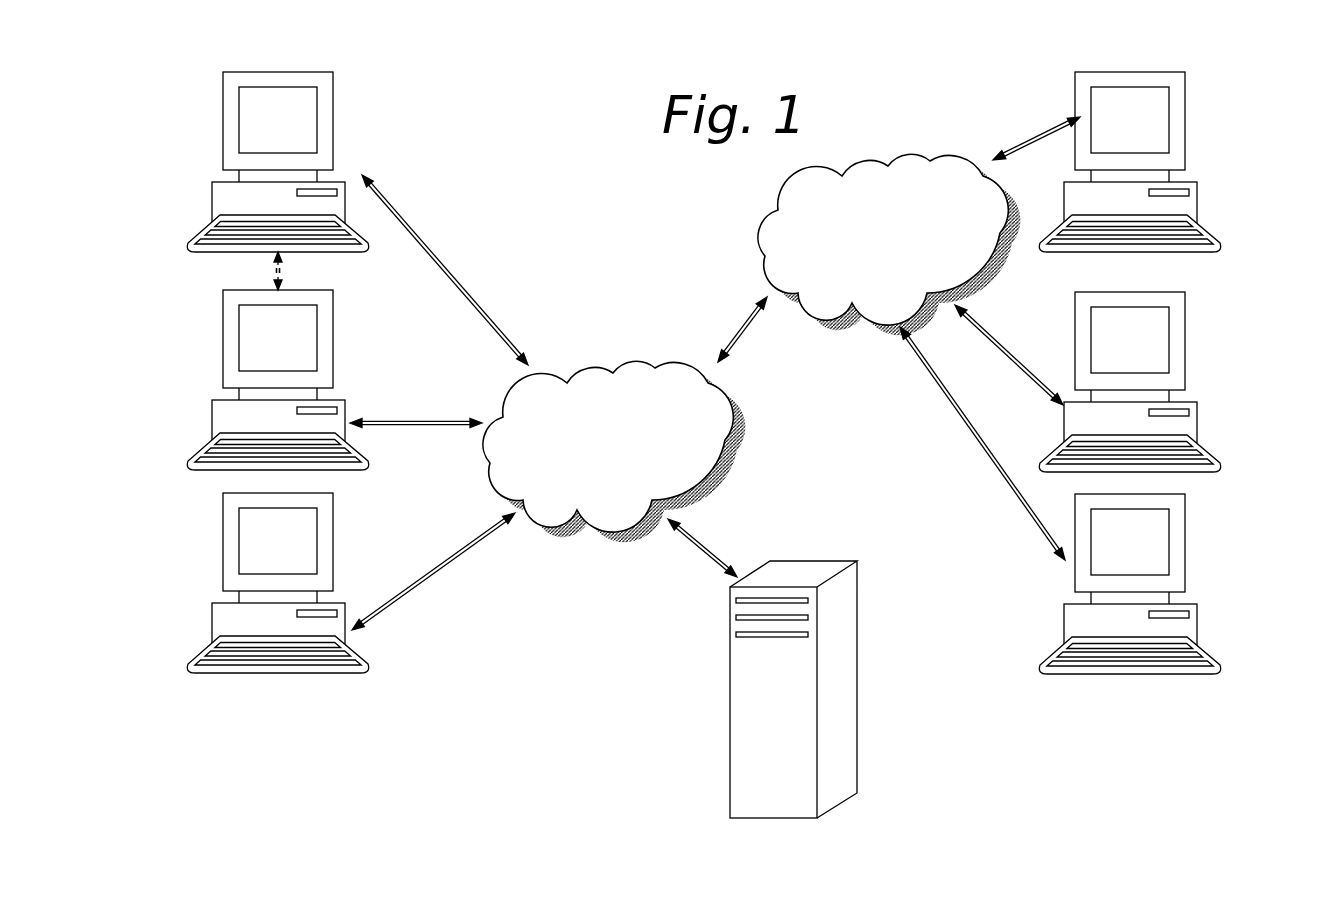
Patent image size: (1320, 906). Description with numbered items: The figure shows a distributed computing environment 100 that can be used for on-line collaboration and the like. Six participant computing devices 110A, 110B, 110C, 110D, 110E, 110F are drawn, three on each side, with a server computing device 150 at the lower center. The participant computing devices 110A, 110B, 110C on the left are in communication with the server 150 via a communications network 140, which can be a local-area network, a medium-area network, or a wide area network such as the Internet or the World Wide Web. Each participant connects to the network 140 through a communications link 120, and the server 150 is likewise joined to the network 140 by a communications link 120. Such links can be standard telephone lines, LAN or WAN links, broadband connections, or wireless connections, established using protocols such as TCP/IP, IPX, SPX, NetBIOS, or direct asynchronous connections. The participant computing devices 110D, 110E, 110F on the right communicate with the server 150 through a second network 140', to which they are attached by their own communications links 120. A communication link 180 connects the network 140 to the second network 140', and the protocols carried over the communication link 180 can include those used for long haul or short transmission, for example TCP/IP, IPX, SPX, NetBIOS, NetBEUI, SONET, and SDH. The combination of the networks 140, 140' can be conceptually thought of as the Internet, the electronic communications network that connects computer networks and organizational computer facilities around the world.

The distributed computing environment 100 is at (624, 248).
The participant computing device 110A is at (288, 119).
The participant computing device 110B is at (303, 346).
The participant computing device 110C is at (295, 553).
The participant computing device 110D is at (1147, 109).
The participant computing device 110E is at (1140, 344).
The participant computing device 110F is at (1150, 554).
The communications link 120 is at (473, 274).
The communications network 140 is at (614, 451).
The second network 140' is at (889, 244).
The server computing device 150 is at (819, 572).
The communication link 180 is at (730, 316).